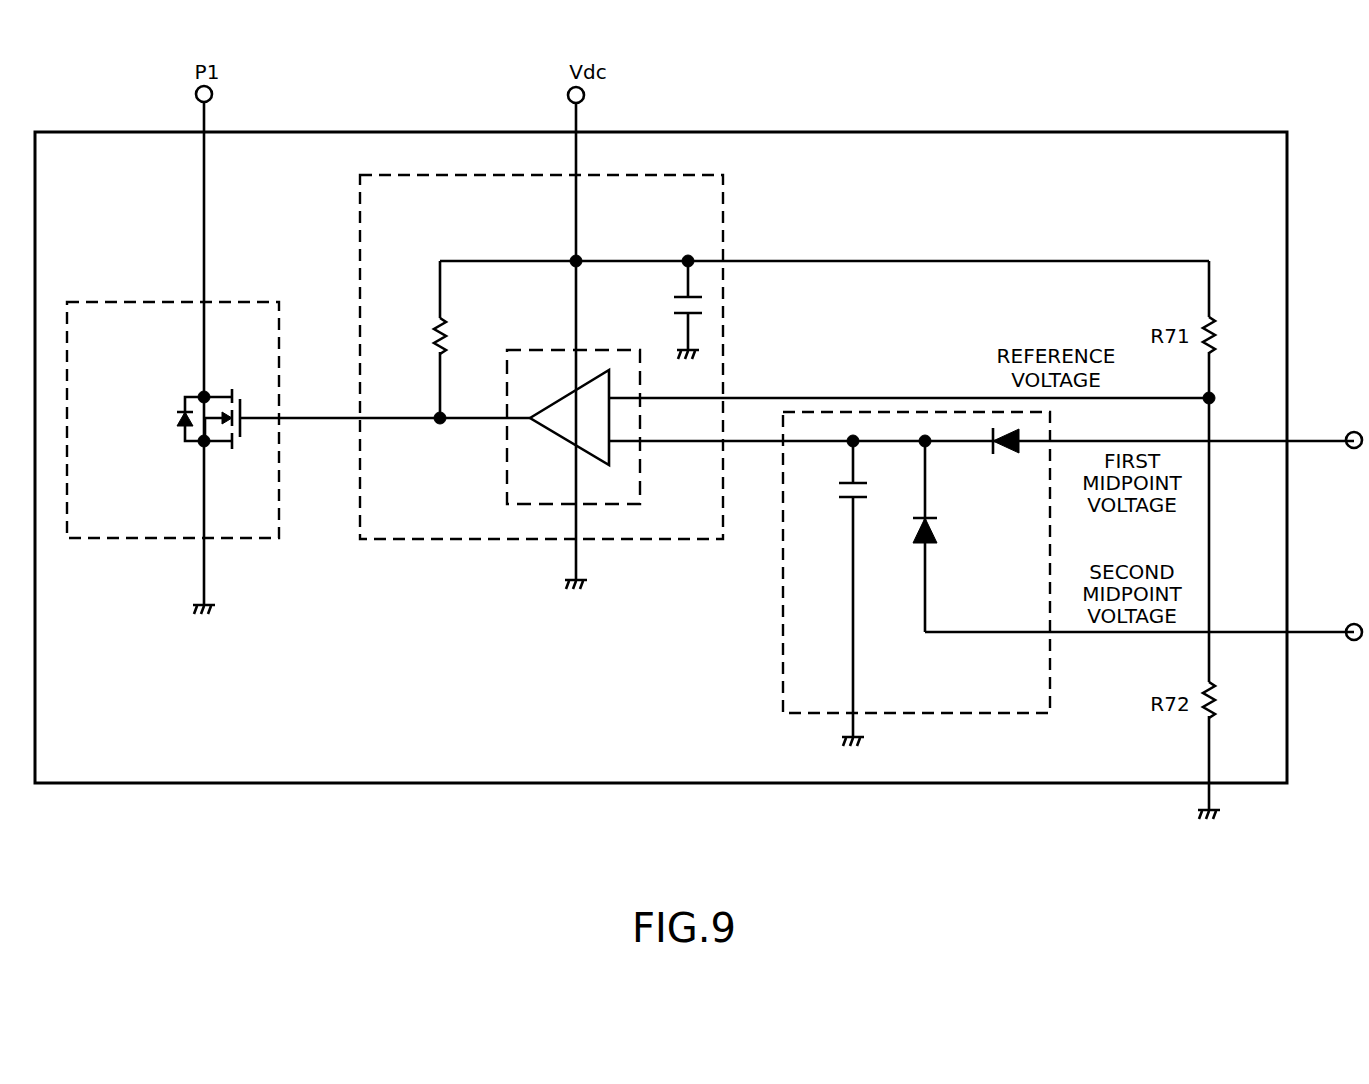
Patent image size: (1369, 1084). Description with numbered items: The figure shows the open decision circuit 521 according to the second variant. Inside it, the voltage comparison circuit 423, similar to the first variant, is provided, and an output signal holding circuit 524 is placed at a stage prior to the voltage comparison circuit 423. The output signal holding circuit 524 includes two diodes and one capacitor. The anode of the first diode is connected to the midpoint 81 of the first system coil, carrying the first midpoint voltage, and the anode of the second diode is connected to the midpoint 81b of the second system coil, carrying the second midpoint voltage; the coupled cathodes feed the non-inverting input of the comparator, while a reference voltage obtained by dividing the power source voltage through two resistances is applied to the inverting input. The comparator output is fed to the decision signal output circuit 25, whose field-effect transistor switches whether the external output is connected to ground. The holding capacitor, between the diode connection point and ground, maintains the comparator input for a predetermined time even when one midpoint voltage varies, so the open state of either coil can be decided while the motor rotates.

The open decision circuit 521 is at (1142, 131).
The voltage comparison circuit 423 is at (432, 172).
The decision signal output circuit 25 is at (113, 299).
The output signal holding circuit 524 is at (780, 694).
The midpoint 81 is at (1354, 430).
The midpoint 81b is at (1352, 641).